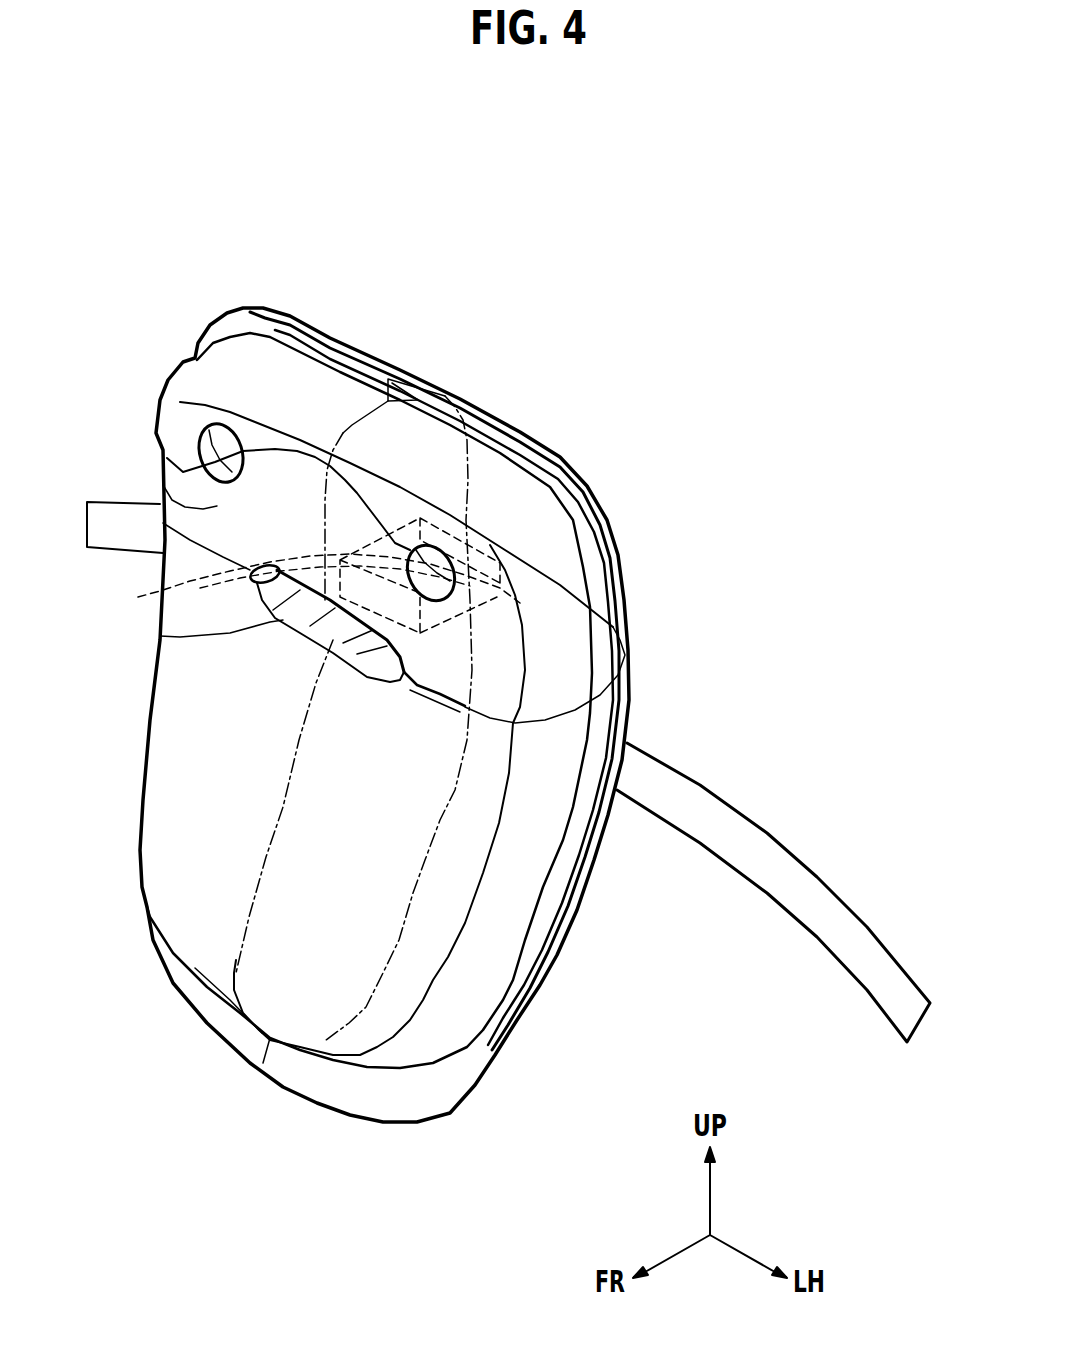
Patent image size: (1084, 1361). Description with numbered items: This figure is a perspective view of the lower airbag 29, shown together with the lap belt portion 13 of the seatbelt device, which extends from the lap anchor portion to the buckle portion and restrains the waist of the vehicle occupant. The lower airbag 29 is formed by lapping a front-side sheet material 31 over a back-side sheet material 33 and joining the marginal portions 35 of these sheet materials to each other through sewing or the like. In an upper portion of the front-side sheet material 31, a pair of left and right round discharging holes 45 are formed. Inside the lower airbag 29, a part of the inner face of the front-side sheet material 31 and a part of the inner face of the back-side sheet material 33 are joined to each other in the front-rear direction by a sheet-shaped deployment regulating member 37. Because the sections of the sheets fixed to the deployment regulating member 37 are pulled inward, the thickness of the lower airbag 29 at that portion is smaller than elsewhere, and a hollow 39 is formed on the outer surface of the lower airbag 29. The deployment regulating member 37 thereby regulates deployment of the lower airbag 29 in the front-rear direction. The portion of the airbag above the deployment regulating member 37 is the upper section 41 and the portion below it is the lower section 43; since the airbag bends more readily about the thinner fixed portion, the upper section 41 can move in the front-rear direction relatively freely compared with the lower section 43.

The lap belt portion 13 is at (815, 890).
The lower airbag 29 is at (521, 402).
The front-side sheet material 31 is at (245, 783).
The back-side sheet material 33 is at (614, 523).
The marginal portions 35 is at (288, 318).
The deployment regulating member 37 is at (138, 597).
The hollow 39 is at (160, 636).
The upper section 41 is at (163, 490).
The lower section 43 is at (177, 712).
The discharging holes 45 is at (200, 437).